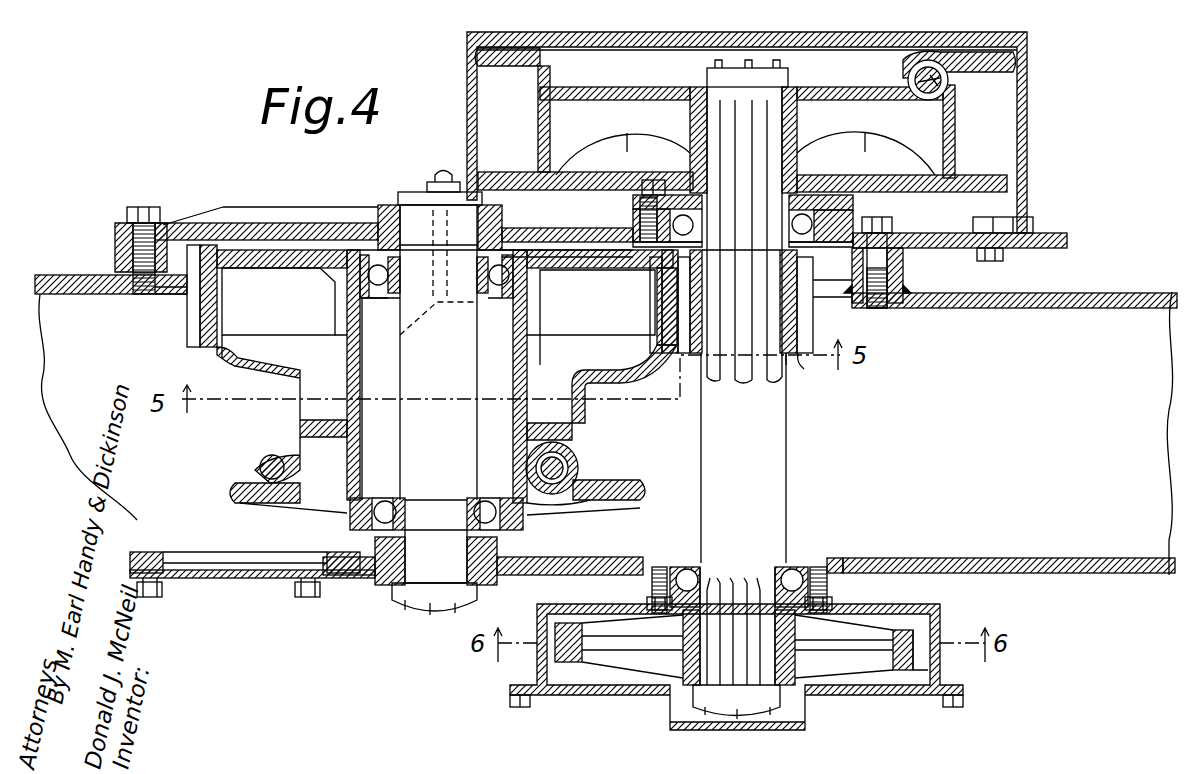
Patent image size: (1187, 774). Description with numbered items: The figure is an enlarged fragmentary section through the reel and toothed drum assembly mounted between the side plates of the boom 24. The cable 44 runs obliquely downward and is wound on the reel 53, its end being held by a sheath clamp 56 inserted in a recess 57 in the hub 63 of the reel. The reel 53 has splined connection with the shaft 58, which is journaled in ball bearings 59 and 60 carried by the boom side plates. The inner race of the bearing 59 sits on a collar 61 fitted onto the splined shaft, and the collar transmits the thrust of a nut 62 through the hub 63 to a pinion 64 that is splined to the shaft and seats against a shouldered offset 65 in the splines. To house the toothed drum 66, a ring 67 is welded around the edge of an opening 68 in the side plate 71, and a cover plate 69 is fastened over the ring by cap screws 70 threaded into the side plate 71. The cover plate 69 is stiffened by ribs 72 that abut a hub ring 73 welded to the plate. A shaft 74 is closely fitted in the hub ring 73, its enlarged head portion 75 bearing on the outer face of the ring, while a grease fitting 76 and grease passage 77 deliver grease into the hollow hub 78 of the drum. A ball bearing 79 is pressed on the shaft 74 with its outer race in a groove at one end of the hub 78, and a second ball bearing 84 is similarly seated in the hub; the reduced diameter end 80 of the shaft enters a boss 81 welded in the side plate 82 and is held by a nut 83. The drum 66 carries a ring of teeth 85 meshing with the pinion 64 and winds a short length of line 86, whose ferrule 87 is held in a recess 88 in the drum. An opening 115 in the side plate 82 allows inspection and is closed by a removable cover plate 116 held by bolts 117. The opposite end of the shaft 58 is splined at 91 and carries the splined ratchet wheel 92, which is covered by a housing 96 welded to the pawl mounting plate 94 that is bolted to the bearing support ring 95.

The boom 24 is at (1128, 296).
The cable 44 is at (950, 80).
The reel 53 is at (950, 150).
The sheath clamp 56 is at (950, 70).
The recess 57 is at (955, 105).
The shaft 58 is at (787, 457).
The ball bearing 59 is at (832, 217).
The ball bearing 60 is at (792, 575).
The collar 61 is at (798, 246).
The nut 62 is at (788, 64).
The hub 63 is at (800, 130).
The pinion 64 is at (800, 323).
The shouldered offset 65 is at (803, 367).
The toothed drum 66 is at (232, 354).
The ring 67 is at (115, 250).
The opening 68 is at (170, 295).
The cover plate 69 is at (1030, 249).
The cap screws 70 is at (143, 207).
The side plate 71 is at (910, 292).
The ribs 72 is at (288, 212).
The hub ring 73 is at (382, 205).
The shaft 74 is at (420, 375).
The enlarged head portion 75 is at (406, 192).
The grease fitting 76 is at (440, 175).
The grease passage 77 is at (398, 335).
The hollow hub 78 is at (512, 362).
The ball bearing 79 is at (379, 286).
The reduced diameter end 80 is at (425, 558).
The boss 81 is at (500, 553).
The side plate 82 is at (598, 558).
The nut 83 is at (400, 605).
The ball bearing 84 is at (384, 502).
The ring of teeth 85 is at (192, 335).
The line 86 is at (258, 460).
The ferrule 87 is at (576, 480).
The recess 88 is at (583, 440).
The splines 91 is at (752, 585).
The ratchet wheel 92 is at (900, 660).
The pawl mounting plate 94 is at (838, 596).
The bearing support ring 95 is at (830, 562).
The housing 96 is at (940, 612).
The opening 115 is at (210, 556).
The cover plate 116 is at (202, 580).
The bolts 117 is at (162, 597).